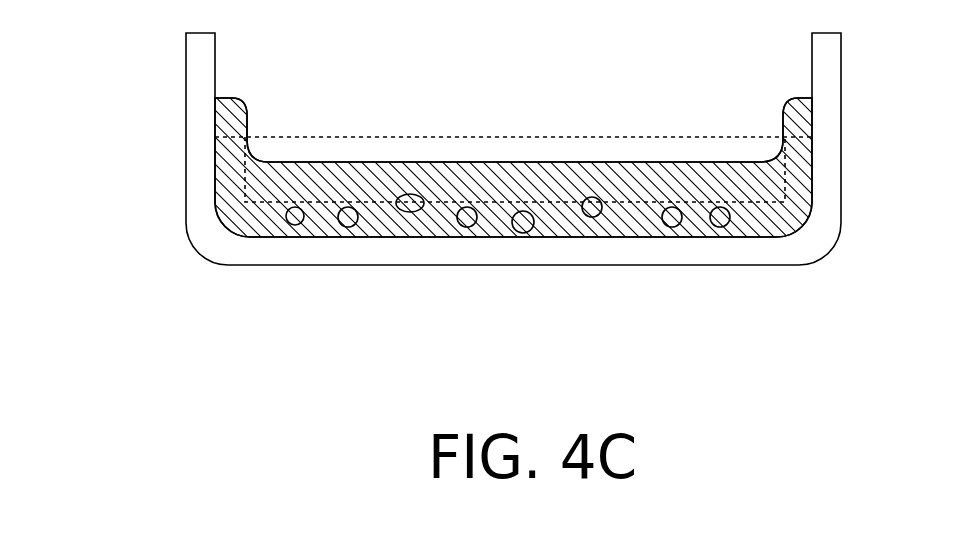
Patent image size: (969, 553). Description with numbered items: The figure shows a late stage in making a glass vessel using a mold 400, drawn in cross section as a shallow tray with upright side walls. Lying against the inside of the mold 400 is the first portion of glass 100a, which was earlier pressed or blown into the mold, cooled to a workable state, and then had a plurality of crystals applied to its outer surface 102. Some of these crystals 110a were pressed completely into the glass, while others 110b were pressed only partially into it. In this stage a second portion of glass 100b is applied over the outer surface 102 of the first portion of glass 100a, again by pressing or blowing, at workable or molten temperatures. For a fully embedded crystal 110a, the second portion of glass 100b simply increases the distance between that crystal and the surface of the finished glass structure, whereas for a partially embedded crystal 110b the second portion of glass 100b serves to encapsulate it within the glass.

The mold 400 is at (270, 265).
The first portion of glass 100a is at (233, 216).
The second portion of glass 100b is at (298, 175).
The second (outer) surface 102 is at (440, 202).
The crystal pressed completely into the glass 110a is at (515, 230).
The crystal pressed partially into the glass 110b is at (598, 202).